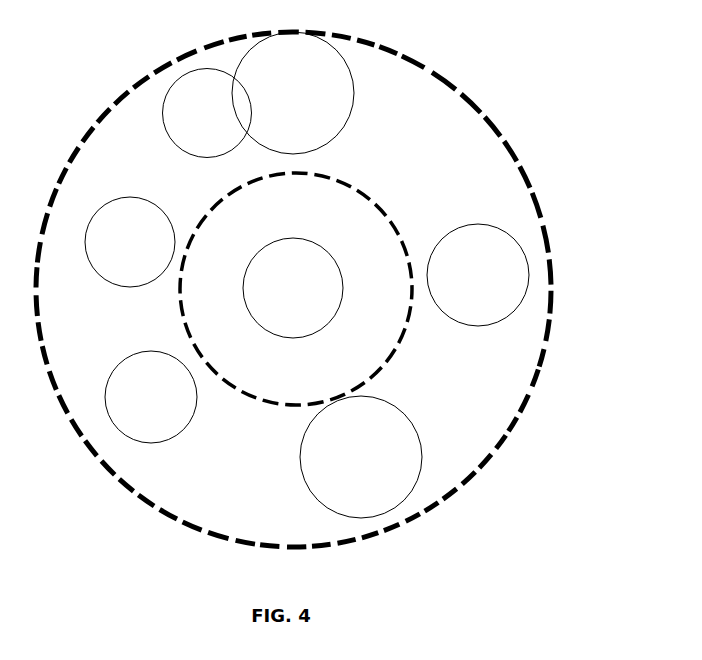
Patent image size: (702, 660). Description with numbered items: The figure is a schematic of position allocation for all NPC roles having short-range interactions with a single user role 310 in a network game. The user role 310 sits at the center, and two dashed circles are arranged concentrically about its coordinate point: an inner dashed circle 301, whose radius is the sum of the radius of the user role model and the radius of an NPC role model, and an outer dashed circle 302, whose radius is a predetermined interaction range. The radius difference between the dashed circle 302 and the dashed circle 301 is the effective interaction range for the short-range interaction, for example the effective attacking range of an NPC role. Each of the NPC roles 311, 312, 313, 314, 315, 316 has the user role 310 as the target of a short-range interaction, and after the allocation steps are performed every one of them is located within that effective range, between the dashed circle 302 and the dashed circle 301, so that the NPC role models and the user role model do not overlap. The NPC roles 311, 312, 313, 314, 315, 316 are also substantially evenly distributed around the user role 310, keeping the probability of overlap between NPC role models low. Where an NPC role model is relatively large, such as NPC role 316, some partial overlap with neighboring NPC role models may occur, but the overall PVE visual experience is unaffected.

The dashed circle 301 is at (394, 357).
The dashed circle 302 is at (538, 378).
The user role 310 is at (293, 288).
The NPC role 311 is at (207, 113).
The NPC role 312 is at (130, 242).
The NPC role 313 is at (151, 397).
The NPC role 314 is at (361, 457).
The NPC role 315 is at (478, 275).
The NPC role 316 is at (293, 93).